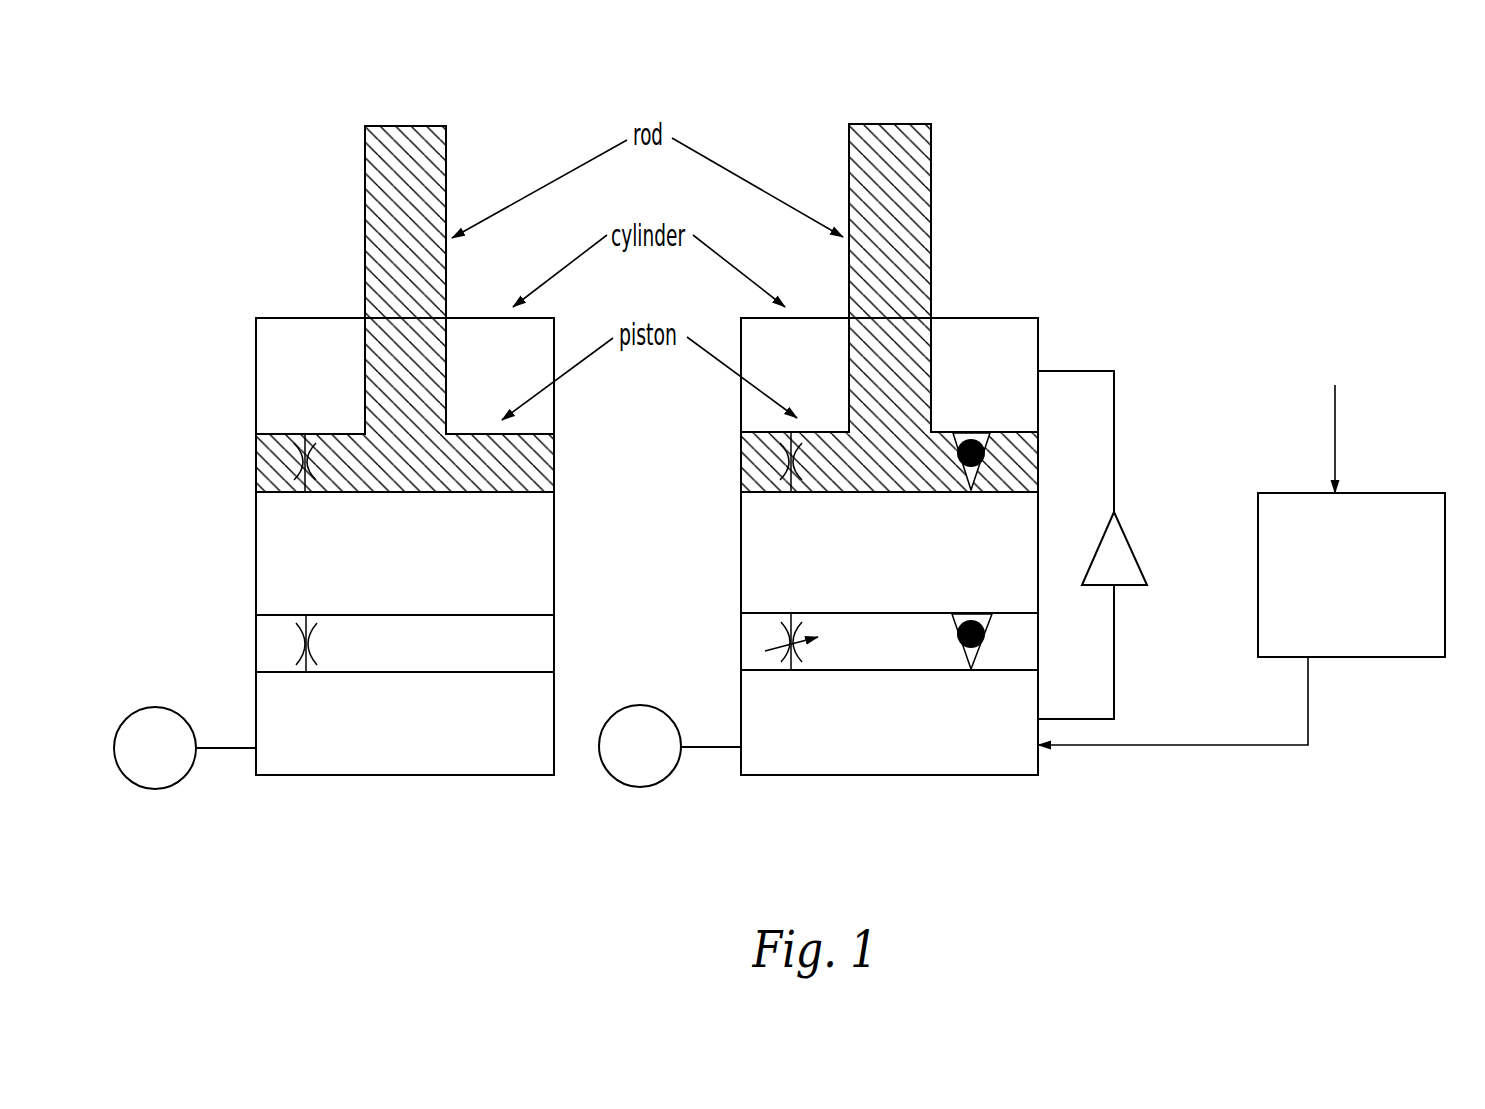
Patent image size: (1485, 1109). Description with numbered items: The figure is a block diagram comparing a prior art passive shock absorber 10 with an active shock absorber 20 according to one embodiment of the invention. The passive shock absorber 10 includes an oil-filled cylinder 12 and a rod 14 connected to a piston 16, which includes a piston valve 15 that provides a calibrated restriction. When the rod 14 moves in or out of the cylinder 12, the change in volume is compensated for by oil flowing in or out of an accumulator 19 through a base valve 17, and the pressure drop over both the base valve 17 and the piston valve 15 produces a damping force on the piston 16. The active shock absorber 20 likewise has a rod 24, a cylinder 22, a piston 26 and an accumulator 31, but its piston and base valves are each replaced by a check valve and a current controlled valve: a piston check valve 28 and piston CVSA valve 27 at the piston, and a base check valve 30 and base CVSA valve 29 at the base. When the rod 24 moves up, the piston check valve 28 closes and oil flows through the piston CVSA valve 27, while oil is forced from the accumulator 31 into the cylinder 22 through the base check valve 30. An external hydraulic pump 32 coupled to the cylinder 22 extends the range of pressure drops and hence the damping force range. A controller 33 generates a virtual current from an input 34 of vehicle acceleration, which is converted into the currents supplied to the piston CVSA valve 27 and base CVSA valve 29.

The passive shock absorber 10 is at (410, 549).
The cylinder 12 is at (293, 318).
The rod 14 is at (447, 160).
The piston valve 15 is at (290, 452).
The piston 16 is at (554, 470).
The base valve 17 is at (297, 647).
The accumulator 19 is at (157, 790).
The active shock absorber 20 is at (856, 551).
The cylinder 22 is at (1007, 316).
The rod 24 is at (932, 153).
The piston 26 is at (1008, 428).
The piston CVSA valve 27 is at (817, 456).
The piston check valve 28 is at (1040, 465).
The base CVSA valve 29 is at (783, 643).
The base check valve 30 is at (985, 636).
The accumulator 31 is at (635, 788).
The hydraulic pump 32 is at (1140, 560).
The controller 33 is at (1382, 657).
The acceleration input 34 is at (1335, 422).